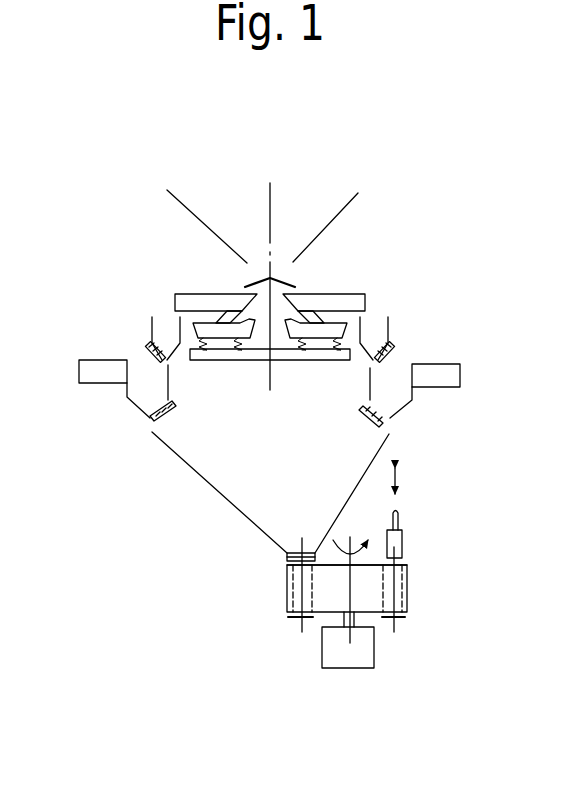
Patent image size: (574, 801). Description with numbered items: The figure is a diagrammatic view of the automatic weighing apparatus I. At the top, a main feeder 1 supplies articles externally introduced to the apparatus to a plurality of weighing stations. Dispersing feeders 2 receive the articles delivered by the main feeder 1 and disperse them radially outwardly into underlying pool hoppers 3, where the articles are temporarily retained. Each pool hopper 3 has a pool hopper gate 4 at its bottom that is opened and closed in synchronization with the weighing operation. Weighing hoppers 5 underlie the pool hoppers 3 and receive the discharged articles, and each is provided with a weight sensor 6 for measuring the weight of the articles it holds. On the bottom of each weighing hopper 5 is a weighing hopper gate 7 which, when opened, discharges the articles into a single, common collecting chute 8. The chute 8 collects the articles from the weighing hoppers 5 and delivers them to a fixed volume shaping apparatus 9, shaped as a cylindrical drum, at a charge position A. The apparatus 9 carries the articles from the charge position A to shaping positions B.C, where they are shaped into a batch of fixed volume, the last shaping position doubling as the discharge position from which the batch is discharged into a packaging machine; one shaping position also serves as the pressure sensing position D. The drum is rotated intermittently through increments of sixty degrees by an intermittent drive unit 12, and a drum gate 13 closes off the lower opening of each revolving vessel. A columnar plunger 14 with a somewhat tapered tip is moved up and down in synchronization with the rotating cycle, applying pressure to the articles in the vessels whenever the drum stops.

The main feeder 1 is at (294, 281).
The dispersing feeder 2 is at (186, 293).
The pool hopper 3 is at (152, 323).
The pool hopper gate 4 is at (148, 350).
The weighing hopper 5 is at (170, 379).
The weight sensor 6 is at (79, 363).
The weighing hopper gate 7 is at (173, 417).
The collecting chute 8 is at (215, 490).
The fixed volume shaping apparatus 9 is at (270, 597).
The intermittent drive unit 12 is at (368, 658).
The drum gate 13 is at (293, 620).
The columnar plunger 14 is at (402, 540).
The charge position A is at (288, 558).
The shaping position and discharge position B.C is at (407, 565).
The pressure sensing position D is at (78, 407).
The automatic weighing apparatus I is at (394, 194).